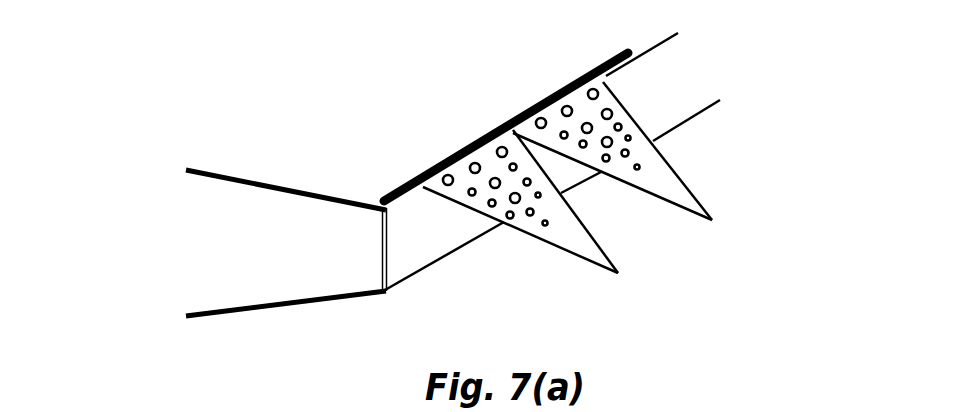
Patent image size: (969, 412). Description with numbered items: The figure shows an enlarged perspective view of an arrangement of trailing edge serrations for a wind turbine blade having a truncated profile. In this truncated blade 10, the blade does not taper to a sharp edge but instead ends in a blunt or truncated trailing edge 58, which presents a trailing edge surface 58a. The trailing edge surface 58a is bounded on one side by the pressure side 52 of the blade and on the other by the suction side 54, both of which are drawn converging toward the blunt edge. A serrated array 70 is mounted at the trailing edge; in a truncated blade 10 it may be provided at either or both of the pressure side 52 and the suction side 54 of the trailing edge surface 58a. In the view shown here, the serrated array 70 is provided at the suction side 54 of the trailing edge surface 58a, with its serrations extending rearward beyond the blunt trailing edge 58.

The truncated blade 10 is at (118, 31).
The pressure side 52 is at (270, 306).
The suction side 54 is at (262, 183).
The trailing edge 58 is at (726, 126).
The trailing edge surface 58a is at (408, 245).
The serrated array 70 is at (482, 135).